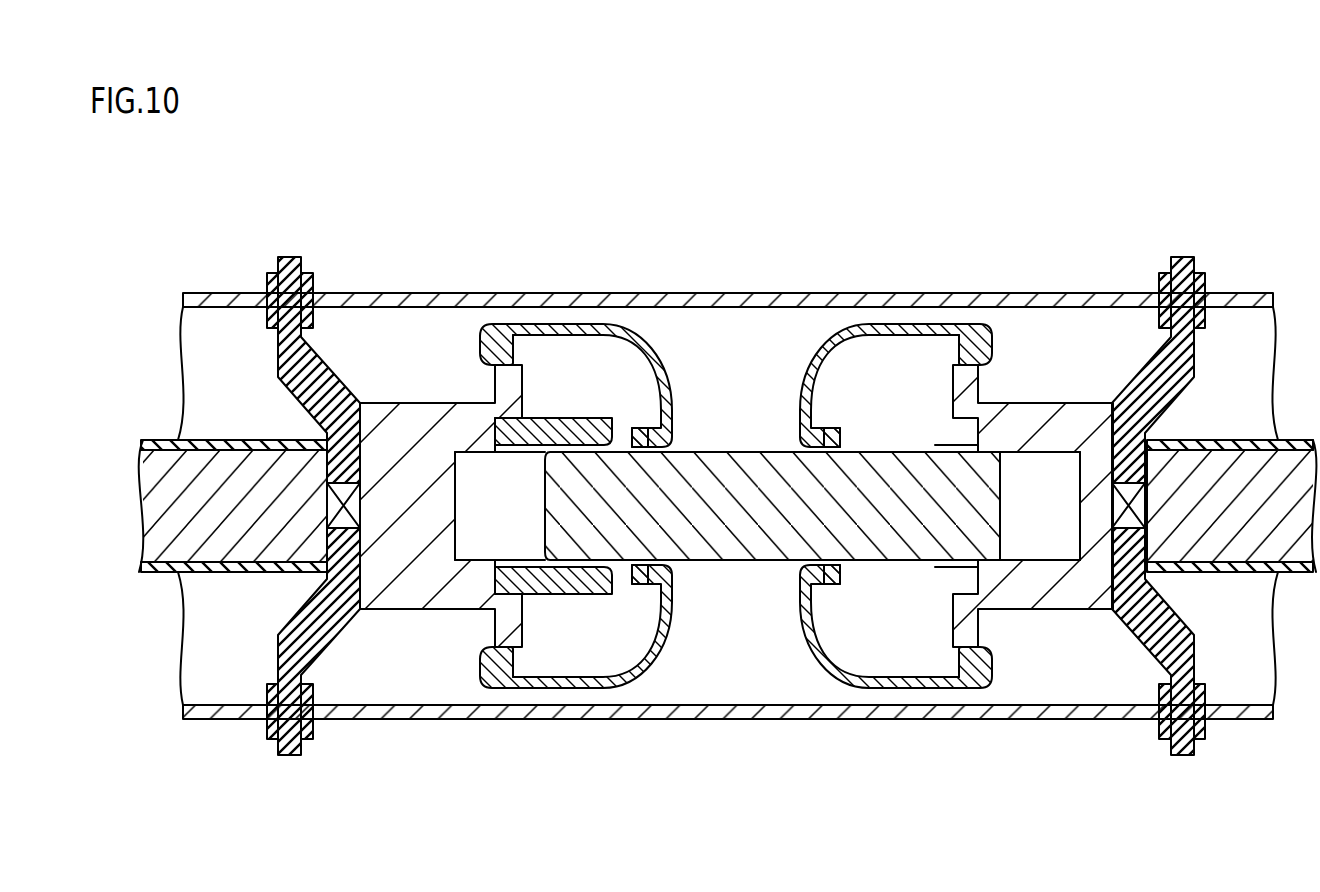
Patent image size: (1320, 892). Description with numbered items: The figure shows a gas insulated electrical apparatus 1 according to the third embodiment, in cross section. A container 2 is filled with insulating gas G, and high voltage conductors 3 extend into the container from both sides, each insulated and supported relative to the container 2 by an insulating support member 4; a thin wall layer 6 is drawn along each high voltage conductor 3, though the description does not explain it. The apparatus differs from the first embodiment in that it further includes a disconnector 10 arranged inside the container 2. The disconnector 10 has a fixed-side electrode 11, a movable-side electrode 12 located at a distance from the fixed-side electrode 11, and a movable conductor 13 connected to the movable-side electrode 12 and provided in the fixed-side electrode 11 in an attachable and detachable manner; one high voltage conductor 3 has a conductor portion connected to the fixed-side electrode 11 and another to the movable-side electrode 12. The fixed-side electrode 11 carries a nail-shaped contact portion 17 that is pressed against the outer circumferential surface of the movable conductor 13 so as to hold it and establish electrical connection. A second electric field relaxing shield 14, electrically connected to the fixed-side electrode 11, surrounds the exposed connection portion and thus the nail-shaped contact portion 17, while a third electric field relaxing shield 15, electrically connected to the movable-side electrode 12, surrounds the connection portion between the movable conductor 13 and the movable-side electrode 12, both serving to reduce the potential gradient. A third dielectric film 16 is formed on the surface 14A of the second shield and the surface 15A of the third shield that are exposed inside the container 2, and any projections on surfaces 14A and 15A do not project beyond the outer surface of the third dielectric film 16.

The gas insulated electrical apparatus 1 is at (1202, 226).
The container 2 is at (745, 303).
The high voltage conductor 3 is at (223, 490).
The insulating support member 4 is at (318, 388).
The pipe liner 6 is at (160, 443).
The disconnector 10 is at (1012, 356).
The fixed-side electrode 11 is at (413, 583).
The movable-side electrode 12 is at (1053, 610).
The movable conductor 13 is at (725, 560).
The second electric field relaxing shield 14 is at (640, 428).
The surface of second electric field relaxing shield 14A is at (500, 330).
The third electric field relaxing shield 15 is at (834, 425).
The surface of third electric field relaxing shield 15A is at (903, 322).
The third dielectric film 16 is at (671, 385).
The nail-shaped contact portion 17 is at (550, 418).
The insulating gas G is at (1087, 345).